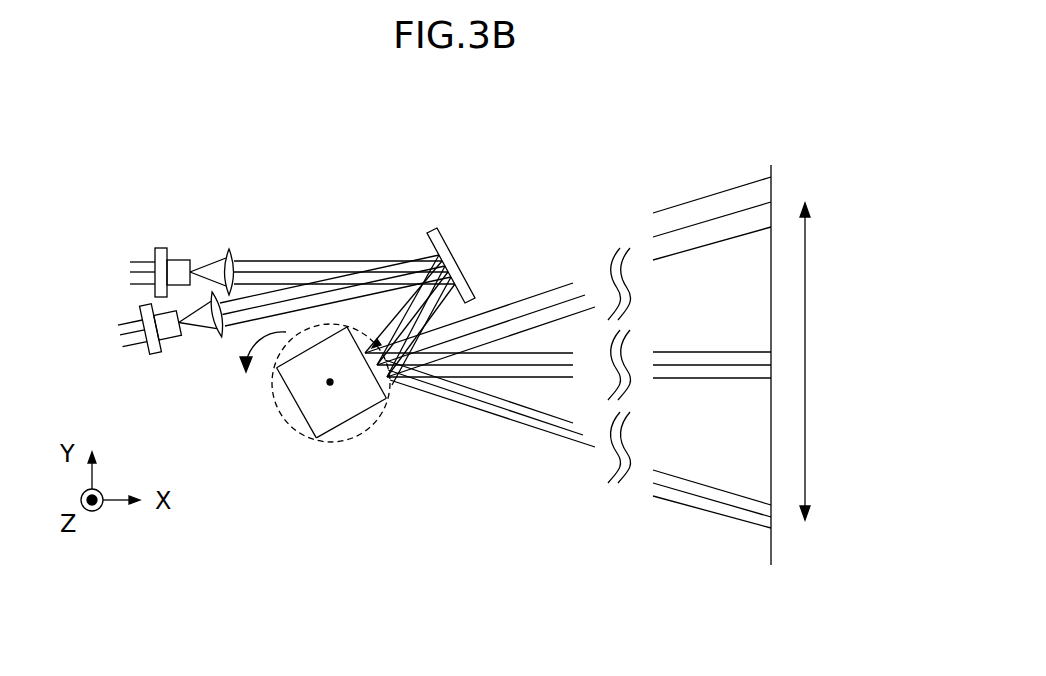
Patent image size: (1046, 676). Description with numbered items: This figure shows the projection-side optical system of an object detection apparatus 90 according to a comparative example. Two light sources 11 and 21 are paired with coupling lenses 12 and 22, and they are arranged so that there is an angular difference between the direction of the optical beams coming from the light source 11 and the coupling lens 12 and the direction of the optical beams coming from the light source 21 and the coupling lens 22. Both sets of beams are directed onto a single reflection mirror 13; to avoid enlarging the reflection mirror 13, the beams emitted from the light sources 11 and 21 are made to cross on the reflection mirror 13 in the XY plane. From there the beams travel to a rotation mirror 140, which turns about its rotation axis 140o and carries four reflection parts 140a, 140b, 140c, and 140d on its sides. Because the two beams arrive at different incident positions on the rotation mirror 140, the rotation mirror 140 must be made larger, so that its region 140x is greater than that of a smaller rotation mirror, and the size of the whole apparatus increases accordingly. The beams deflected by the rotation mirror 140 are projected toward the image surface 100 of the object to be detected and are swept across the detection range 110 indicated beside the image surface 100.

The object detection apparatus 90 is at (124, 166).
The light source 11 is at (162, 248).
The coupling lens 12 is at (230, 248).
The reflection mirror 13 is at (433, 229).
The light source 21 is at (157, 354).
The coupling lens 22 is at (216, 340).
The rotation mirror 140 is at (328, 425).
The reflection part 140a is at (388, 384).
The reflection part 140b is at (277, 344).
The reflection part 140c is at (297, 422).
The reflection part 140d is at (357, 421).
The rotation axis 140o is at (329, 384).
The region 140x is at (349, 443).
The image surface 100 is at (773, 178).
The detection range 110 is at (807, 358).